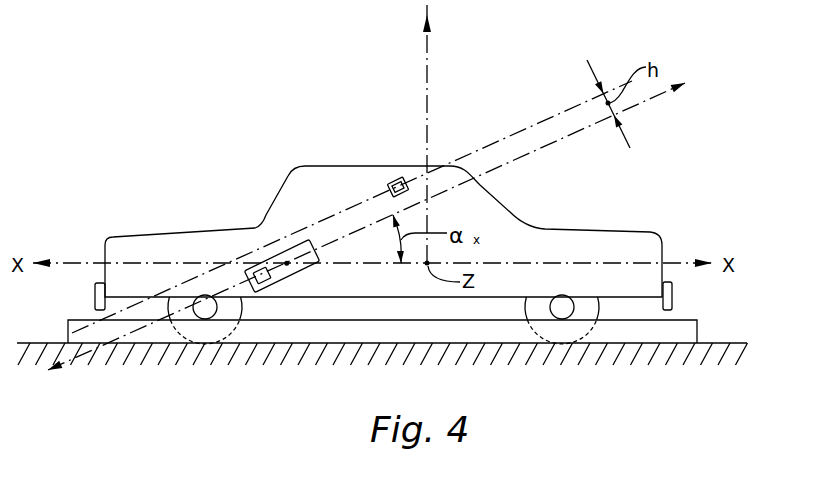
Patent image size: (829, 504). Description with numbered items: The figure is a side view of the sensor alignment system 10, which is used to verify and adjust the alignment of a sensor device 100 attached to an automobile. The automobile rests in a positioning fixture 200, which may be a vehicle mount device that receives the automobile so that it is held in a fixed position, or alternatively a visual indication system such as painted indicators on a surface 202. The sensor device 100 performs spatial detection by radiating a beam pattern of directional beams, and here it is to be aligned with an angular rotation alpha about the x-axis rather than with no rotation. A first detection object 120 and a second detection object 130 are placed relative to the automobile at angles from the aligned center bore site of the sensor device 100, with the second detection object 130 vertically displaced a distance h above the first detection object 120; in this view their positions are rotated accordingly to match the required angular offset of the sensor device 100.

The sensor alignment system 10 is at (126, 99).
The sensor device 100 is at (284, 241).
The first detection object 120 is at (248, 259).
The second detection object 130 is at (393, 181).
The positioning fixture 200 is at (667, 335).
The surface 202 is at (28, 342).